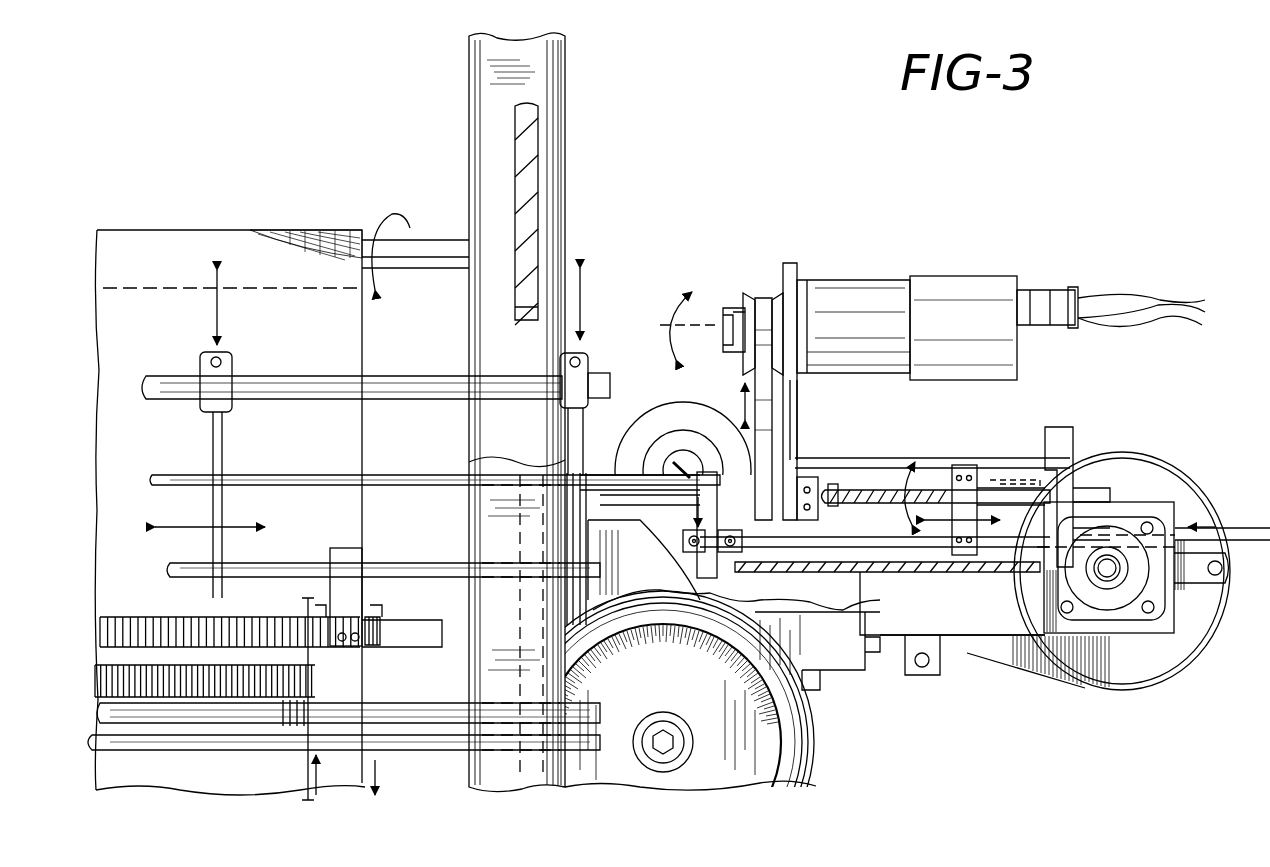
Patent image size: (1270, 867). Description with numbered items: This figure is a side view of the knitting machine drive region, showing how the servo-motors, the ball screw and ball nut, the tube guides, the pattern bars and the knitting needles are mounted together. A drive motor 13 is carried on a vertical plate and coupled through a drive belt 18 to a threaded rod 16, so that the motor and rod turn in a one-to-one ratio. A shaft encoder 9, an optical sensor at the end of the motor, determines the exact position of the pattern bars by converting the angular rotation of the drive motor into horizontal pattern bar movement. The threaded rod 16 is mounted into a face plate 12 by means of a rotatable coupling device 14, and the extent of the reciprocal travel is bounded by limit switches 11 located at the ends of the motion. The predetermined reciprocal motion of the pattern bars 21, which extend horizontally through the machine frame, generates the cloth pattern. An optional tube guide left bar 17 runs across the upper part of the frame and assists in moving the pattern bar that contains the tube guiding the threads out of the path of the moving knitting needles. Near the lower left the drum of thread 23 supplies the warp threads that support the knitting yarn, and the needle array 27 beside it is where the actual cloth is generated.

The shaft encoders 9 is at (1010, 368).
The limit switches 11 is at (1070, 442).
The face plate 12 is at (960, 465).
The drive motors 13 is at (847, 368).
The rotatable coupling devices 14 is at (1005, 470).
The threaded rods 16 is at (930, 480).
The tube guide left bar 17 is at (452, 385).
The drive belts 18 is at (760, 376).
The pattern bars 21 is at (395, 481).
The drums of thread 23 is at (308, 752).
The needle array 27 is at (155, 612).